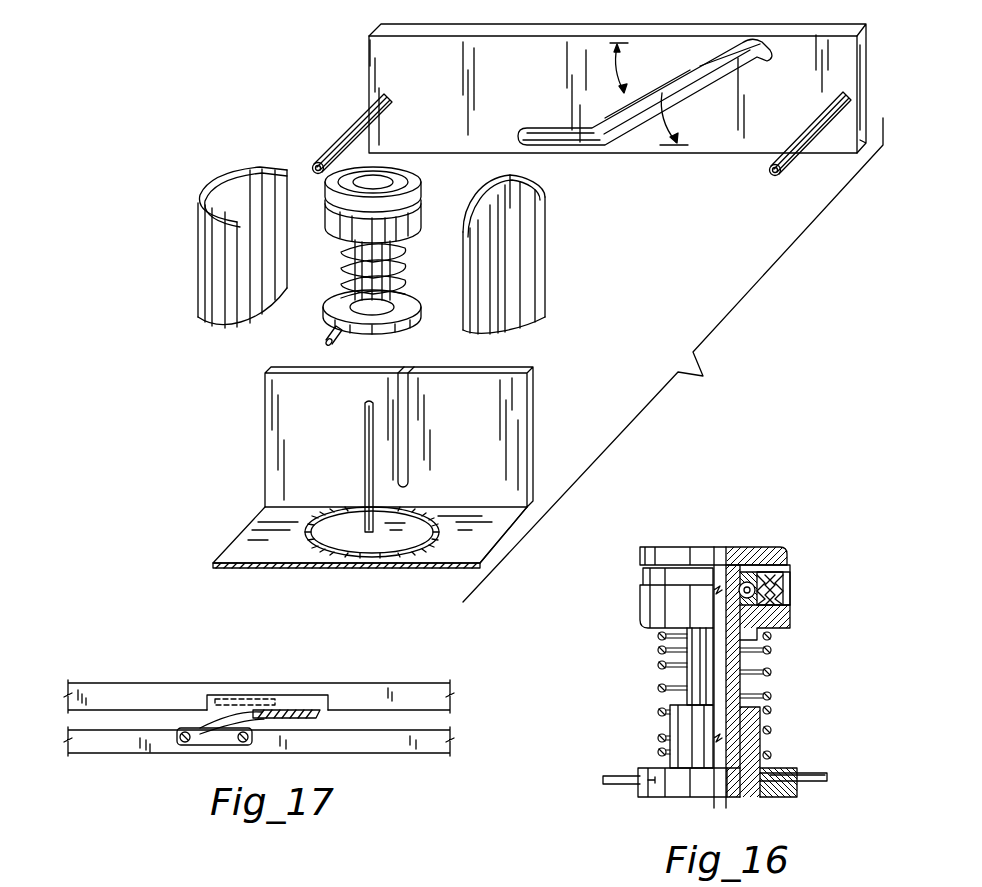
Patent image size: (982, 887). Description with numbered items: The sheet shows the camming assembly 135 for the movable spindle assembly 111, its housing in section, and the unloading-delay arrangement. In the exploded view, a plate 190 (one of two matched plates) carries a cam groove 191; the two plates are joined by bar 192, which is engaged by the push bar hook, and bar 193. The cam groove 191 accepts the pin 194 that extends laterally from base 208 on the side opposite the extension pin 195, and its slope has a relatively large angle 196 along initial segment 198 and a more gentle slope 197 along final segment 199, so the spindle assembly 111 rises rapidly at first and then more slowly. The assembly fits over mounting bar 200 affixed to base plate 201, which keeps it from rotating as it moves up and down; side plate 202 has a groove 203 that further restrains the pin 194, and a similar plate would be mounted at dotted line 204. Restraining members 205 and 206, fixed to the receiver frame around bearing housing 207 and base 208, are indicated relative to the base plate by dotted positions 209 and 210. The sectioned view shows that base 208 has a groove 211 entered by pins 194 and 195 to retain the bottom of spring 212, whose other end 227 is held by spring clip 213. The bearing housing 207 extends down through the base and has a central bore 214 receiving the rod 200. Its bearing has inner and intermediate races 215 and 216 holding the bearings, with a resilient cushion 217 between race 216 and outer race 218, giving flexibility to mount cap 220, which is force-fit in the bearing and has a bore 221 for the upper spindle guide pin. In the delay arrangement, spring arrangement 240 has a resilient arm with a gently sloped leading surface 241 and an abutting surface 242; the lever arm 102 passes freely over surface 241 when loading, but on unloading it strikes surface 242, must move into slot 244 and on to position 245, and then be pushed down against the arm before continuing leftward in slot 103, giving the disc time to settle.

In FIG. 15, the camming assembly 135 is at (252, 80).
In FIG. 15, the plate 190 is at (518, 14).
In FIG. 15, the cam groove 191 is at (541, 130).
In FIG. 15, the bar 192 is at (353, 122).
In FIG. 15, the bar 193 is at (770, 166).
In FIG. 15, the pin 194 is at (405, 267).
In FIG. 16, the pin 194 is at (815, 772).
In FIG. 15, the extension pin 195 is at (335, 336).
In FIG. 16, the extension pin 195 is at (612, 776).
In FIG. 15, the angle 196 is at (681, 119).
In FIG. 15, the slope 197 is at (616, 61).
In FIG. 15, the segment 198 is at (622, 113).
In FIG. 15, the segment 199 is at (703, 67).
In FIG. 15, the mounting bar 200 is at (364, 445).
In FIG. 15, the base plate 201 is at (247, 525).
In FIG. 15, the side plate 202 is at (533, 412).
In FIG. 15, the groove 203 is at (408, 434).
In FIG. 15, the dotted line 204 is at (210, 568).
In FIG. 15, the restraining member 205 is at (232, 173).
In FIG. 15, the restraining member 206 is at (531, 250).
In FIG. 15, the bearing housing 207 is at (415, 225).
In FIG. 16, the bearing housing 207 is at (648, 602).
In FIG. 15, the base 208 is at (418, 310).
In FIG. 16, the base 208 is at (682, 793).
In FIG. 15, the position 209 is at (326, 556).
In FIG. 15, the position 210 is at (440, 557).
In FIG. 16, the groove 211 is at (777, 770).
In FIG. 16, the spring 212 is at (772, 790).
In FIG. 16, the spring clip 213 is at (772, 647).
In FIG. 16, the central bore 214 is at (731, 792).
In FIG. 16, the inner race 215 is at (736, 572).
In FIG. 16, the intermediate race 216 is at (775, 556).
In FIG. 16, the resilient cushion 217 is at (764, 580).
In FIG. 16, the outer race 218 is at (790, 590).
In FIG. 15, the mount cap 220 is at (418, 189).
In FIG. 16, the mount cap 220 is at (660, 556).
In FIG. 16, the bore 221 is at (717, 556).
In FIG. 16, the spring end 227 is at (665, 633).
In FIG. 15, the spindle assembly 111 is at (419, 178).
In FIG. 17, the lever arm 102 is at (337, 710).
In FIG. 17, the slot 103 is at (440, 722).
In FIG. 17, the spring arrangement 240 is at (220, 740).
In FIG. 17, the leading surface 241 is at (206, 718).
In FIG. 17, the abutting surface 242 is at (258, 719).
In FIG. 17, the slot 244 is at (300, 693).
In FIG. 17, the position 245 is at (278, 668).